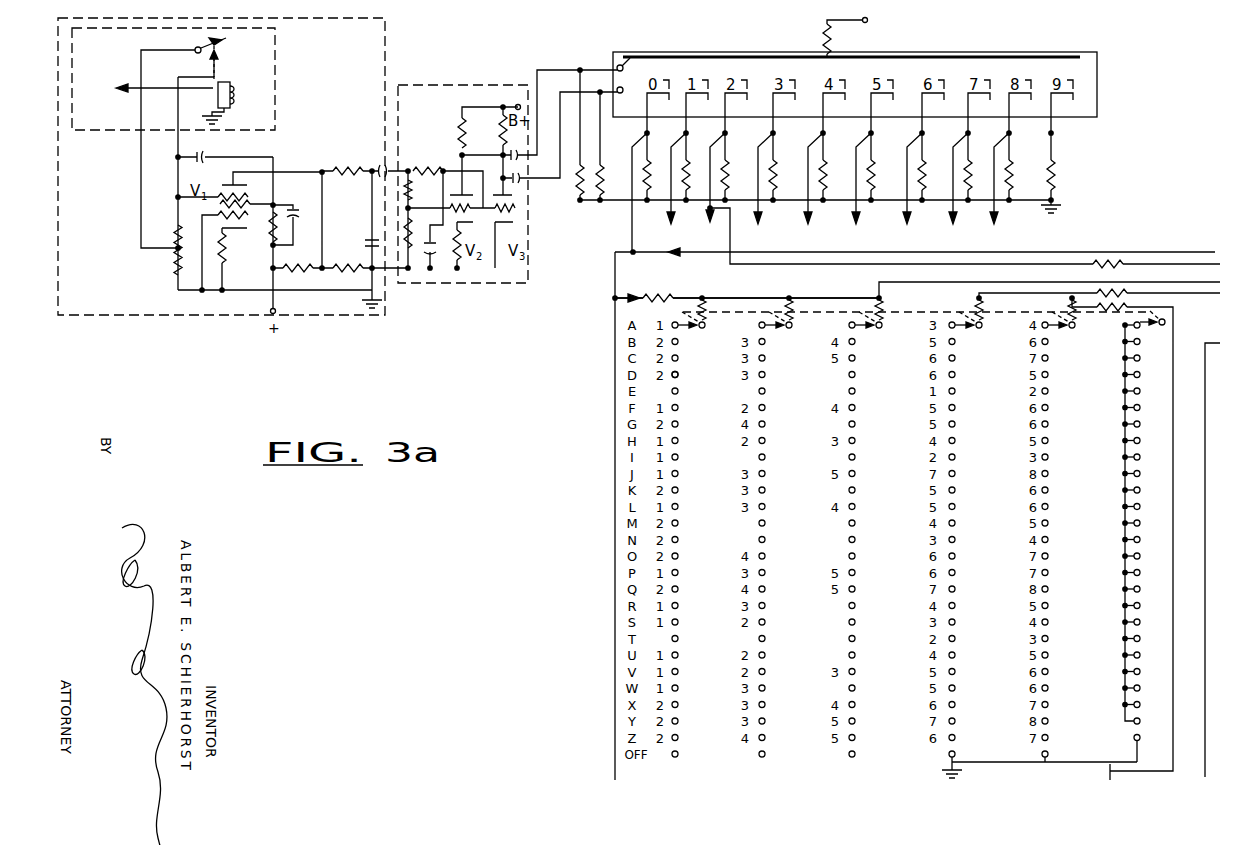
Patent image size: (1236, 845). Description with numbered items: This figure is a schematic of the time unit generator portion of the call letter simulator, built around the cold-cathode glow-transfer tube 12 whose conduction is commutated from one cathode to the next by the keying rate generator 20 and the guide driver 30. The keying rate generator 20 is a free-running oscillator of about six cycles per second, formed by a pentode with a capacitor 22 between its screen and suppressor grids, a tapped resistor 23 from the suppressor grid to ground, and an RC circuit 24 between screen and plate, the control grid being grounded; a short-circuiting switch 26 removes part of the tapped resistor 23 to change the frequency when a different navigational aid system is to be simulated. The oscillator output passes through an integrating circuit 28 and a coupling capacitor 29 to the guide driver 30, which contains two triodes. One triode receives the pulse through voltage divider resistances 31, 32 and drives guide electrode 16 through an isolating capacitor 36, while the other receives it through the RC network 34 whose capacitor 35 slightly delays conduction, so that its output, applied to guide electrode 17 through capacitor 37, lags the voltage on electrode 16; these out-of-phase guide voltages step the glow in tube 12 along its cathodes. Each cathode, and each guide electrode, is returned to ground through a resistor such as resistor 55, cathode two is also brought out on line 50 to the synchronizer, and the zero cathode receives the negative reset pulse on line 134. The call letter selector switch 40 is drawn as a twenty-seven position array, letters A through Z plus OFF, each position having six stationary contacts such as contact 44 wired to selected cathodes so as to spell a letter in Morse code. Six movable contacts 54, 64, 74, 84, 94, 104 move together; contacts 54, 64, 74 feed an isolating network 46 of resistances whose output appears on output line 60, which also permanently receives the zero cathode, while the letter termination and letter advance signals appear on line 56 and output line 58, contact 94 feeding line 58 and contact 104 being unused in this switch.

The glow-transfer tube 12 is at (657, 49).
The guide electrode 16 is at (631, 71).
The guide electrode 17 is at (630, 98).
The keying rate generator 20 is at (305, 315).
The capacitor 22 is at (207, 156).
The tapped resistor 23 is at (174, 261).
The RC circuit 24 is at (279, 206).
The short-circuiting switch 26 is at (250, 63).
The integrating circuit 28 is at (355, 201).
The coupling capacitor 29 is at (379, 169).
The guide driver 30 is at (440, 285).
The voltage divider resistance 31 is at (419, 190).
The voltage divider resistance 32 is at (417, 230).
The RC network 34 is at (411, 168).
The capacitor 35 is at (439, 255).
The isolating capacitor 36 is at (539, 115).
The capacitor 37 is at (524, 183).
The call letter selector switch 40 is at (572, 419).
The stationary contact 44 is at (679, 375).
The isolating network 46 is at (774, 298).
The line 50 is at (733, 249).
The movable contact 54 is at (689, 322).
The resistor 55 is at (688, 190).
The line 56 is at (1012, 284).
The output line 58 is at (1176, 330).
The output line 60 is at (908, 283).
The movable contact 64 is at (787, 330).
The movable contact 74 is at (877, 330).
The movable contact 84 is at (977, 330).
The movable contact 94 is at (1070, 330).
The movable contact 104 is at (1157, 328).
The line 134 is at (937, 252).